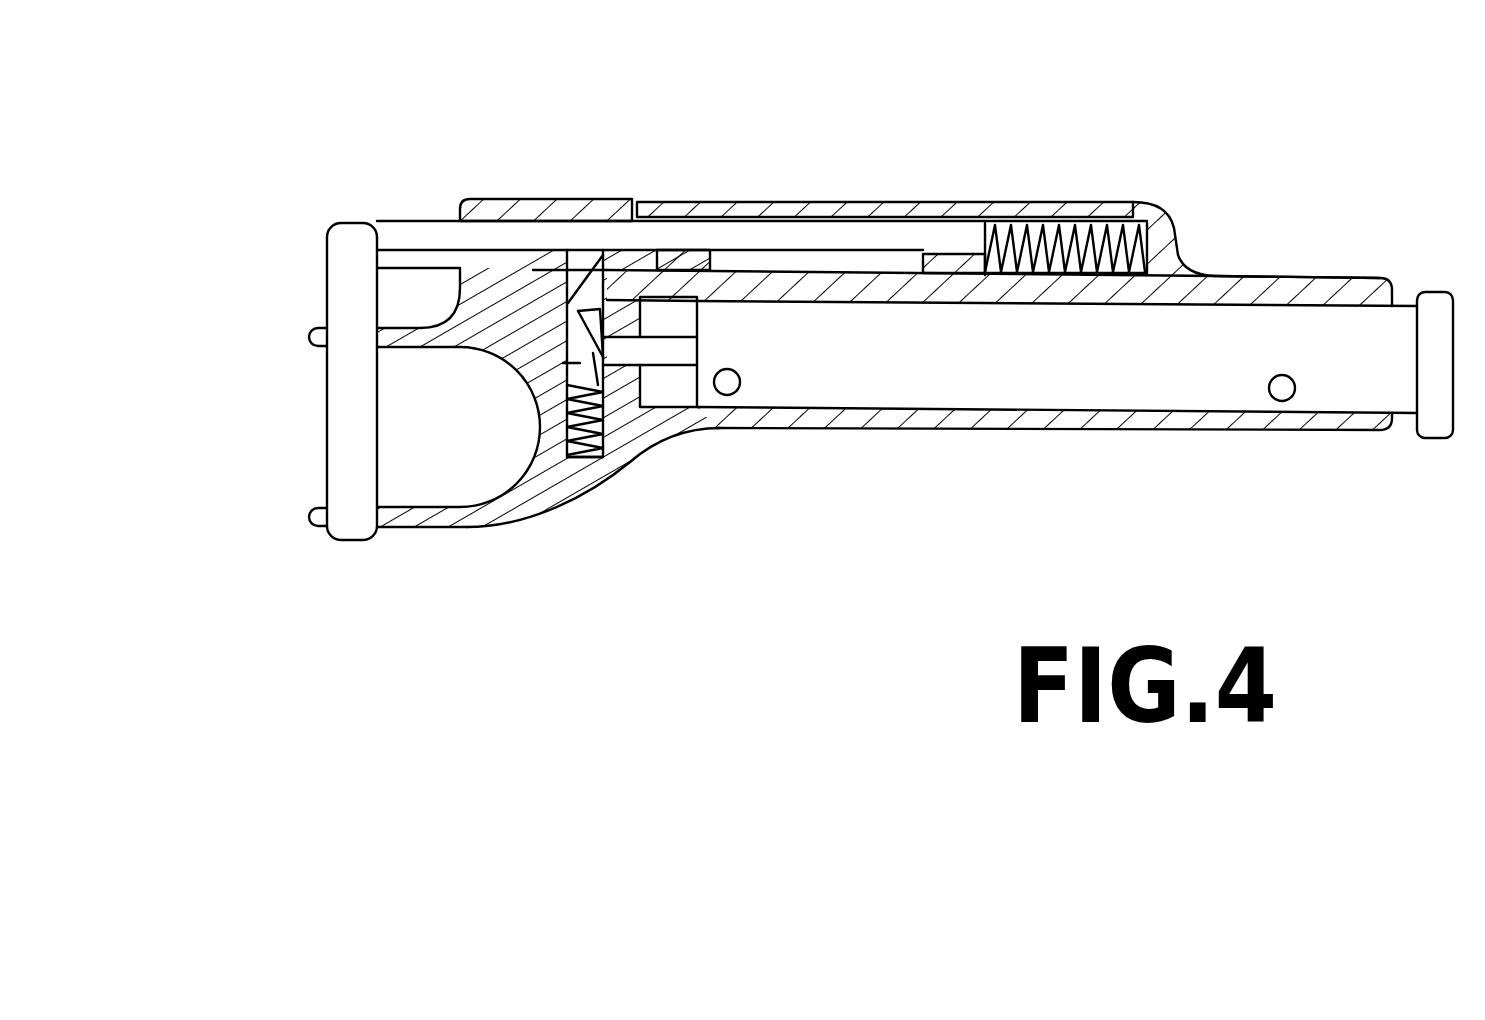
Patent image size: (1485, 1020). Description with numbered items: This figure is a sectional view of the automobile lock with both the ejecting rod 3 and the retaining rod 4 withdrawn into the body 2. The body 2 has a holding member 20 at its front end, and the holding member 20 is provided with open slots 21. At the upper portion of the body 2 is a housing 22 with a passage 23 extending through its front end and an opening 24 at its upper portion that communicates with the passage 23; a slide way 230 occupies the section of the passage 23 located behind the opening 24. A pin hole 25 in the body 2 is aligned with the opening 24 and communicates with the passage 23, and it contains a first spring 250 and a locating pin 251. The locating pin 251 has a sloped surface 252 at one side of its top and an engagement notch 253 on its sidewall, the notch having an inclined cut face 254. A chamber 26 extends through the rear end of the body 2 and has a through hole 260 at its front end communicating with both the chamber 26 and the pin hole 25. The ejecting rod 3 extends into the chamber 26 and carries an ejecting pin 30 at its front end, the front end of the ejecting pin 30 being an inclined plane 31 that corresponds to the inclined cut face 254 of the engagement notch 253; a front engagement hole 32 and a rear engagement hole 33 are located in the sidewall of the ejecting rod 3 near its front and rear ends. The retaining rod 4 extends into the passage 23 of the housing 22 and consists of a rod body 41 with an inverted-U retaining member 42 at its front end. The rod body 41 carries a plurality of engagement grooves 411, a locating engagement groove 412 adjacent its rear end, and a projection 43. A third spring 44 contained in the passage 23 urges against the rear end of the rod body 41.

The retaining rod 4 is at (348, 212).
The body 2 is at (999, 402).
The ejecting rod 3 is at (1163, 382).
The holding member 20 is at (457, 528).
The open slots 21 is at (413, 535).
The housing 22 is at (1072, 205).
The passage 23 is at (873, 303).
The opening 24 is at (600, 210).
The pin hole 25 is at (468, 372).
The chamber 26 is at (1097, 414).
The ejecting pin 30 is at (730, 444).
The inclined plane 31 is at (630, 341).
The front engagement hole 32 is at (728, 393).
The rear engagement hole 33 is at (1283, 398).
The rod body 41 is at (412, 232).
The retaining member 42 is at (343, 292).
The projection 43 is at (875, 215).
The third spring 44 is at (1135, 208).
The slide way 230 is at (970, 222).
The first spring 250 is at (593, 458).
The locating pin 251 is at (605, 345).
The sloped surface 252 is at (590, 252).
The engagement notch 253 is at (563, 363).
The inclined cut face 254 is at (600, 358).
The through hole 260 is at (602, 340).
The engagement grooves 411 is at (700, 257).
The locating engagement groove 412 is at (932, 262).